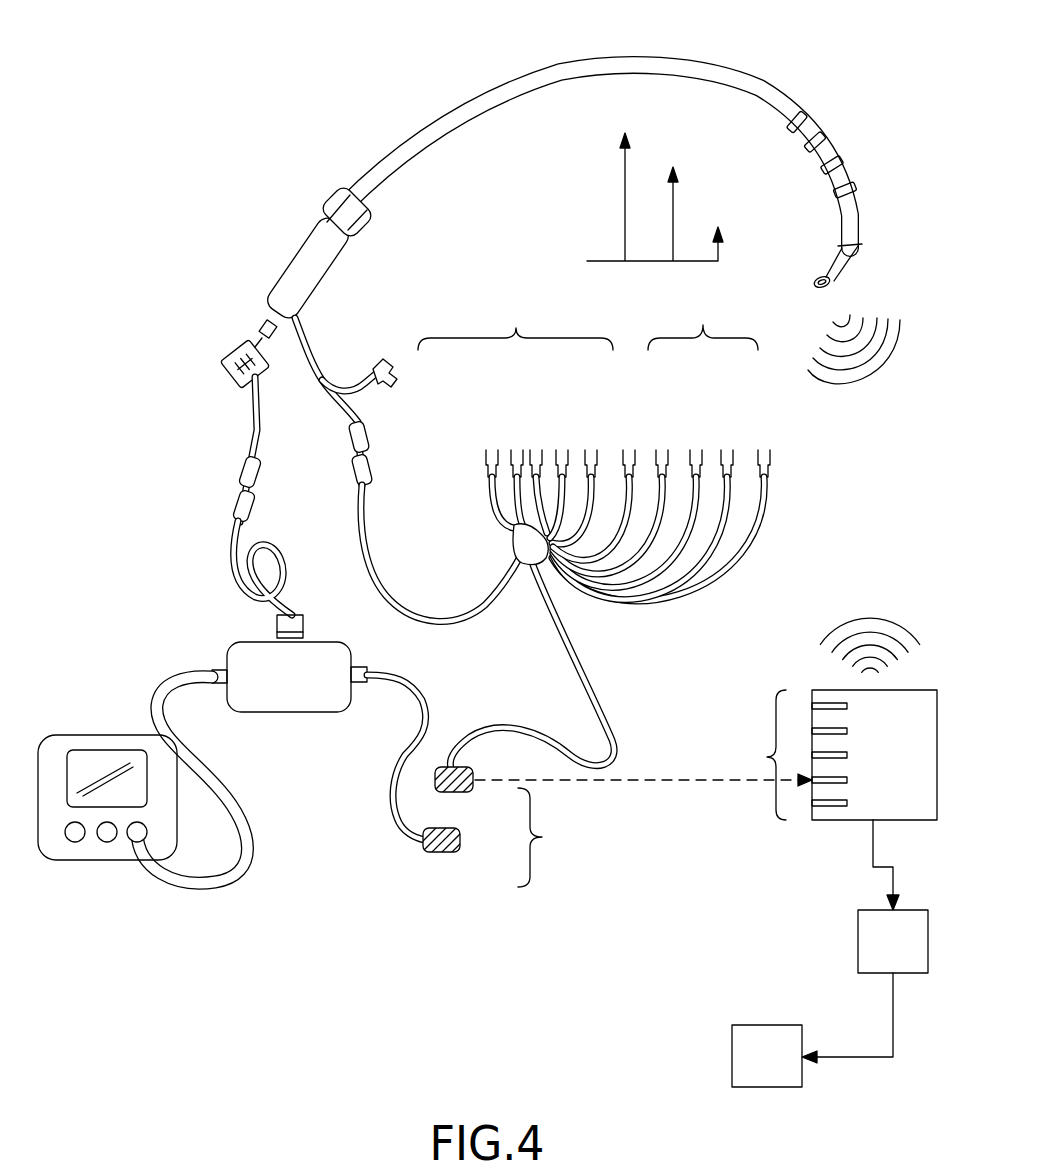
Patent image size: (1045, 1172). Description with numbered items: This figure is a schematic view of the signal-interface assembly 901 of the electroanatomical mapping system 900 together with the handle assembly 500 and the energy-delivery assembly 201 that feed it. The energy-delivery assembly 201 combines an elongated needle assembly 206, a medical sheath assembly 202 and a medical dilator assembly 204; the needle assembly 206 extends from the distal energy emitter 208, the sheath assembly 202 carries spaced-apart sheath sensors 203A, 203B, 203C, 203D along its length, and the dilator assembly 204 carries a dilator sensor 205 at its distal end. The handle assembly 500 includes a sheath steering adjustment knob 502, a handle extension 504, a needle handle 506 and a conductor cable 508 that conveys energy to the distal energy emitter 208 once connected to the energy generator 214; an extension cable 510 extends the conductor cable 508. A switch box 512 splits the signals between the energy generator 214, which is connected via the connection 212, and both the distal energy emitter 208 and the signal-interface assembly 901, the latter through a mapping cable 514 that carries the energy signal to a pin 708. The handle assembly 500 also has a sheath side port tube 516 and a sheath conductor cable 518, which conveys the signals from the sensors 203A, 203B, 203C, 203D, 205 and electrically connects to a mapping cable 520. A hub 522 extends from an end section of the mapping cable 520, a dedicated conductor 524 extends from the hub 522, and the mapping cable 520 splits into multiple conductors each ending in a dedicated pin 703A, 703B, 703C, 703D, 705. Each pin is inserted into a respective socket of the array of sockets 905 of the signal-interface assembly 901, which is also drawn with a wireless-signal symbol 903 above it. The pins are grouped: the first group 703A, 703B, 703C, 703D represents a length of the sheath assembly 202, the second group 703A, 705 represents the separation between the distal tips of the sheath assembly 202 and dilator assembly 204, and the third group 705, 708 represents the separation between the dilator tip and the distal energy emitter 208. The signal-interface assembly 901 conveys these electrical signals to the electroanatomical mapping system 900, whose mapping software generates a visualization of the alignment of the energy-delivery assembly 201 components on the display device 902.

The handle assembly 500 is at (300, 80).
The sheath steering adjustment knob 502 is at (340, 192).
The handle extension 504 is at (294, 259).
The needle handle 506 is at (230, 357).
The conductor cable 508 is at (255, 426).
The extension cable 510 is at (231, 543).
The switch box 512 is at (307, 714).
The mapping cable 514 is at (391, 815).
The sheath side port tube 516 is at (389, 360).
The sheath conductor cable 518 is at (342, 407).
The mapping cable 520 is at (467, 626).
The hub 522 is at (510, 540).
The dedicated conductor 524 is at (684, 599).
The energy-delivery assembly 201 is at (538, 274).
The medical sheath assembly 202 is at (625, 78).
The sheath sensor 203A is at (848, 175).
The sheath sensor 203B is at (848, 162).
The sheath sensor 203C is at (819, 138).
The sheath sensor 203D is at (800, 118).
The medical dilator assembly 204 is at (845, 222).
The dilator sensor 205 is at (851, 250).
The elongated needle assembly 206 is at (838, 264).
The distal energy emitter 208 is at (814, 283).
The connection 212 is at (197, 888).
The energy generator 214 is at (77, 861).
The pin 703A is at (487, 452).
The pin 703B is at (516, 453).
The pin 703C is at (538, 452).
The pin 703D is at (567, 452).
The pin 705 is at (638, 452).
The pin 708 is at (440, 853).
The electroanatomical mapping system 900 is at (912, 957).
The signal-interface assembly 901 is at (917, 773).
The display device 902 is at (747, 1072).
The wireless signal 903 is at (872, 617).
The array of sockets 905 is at (767, 757).